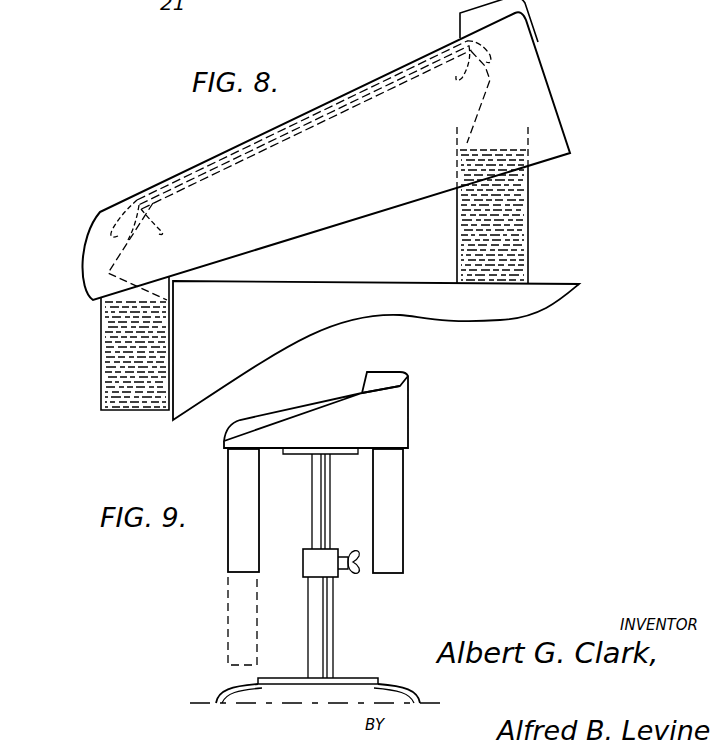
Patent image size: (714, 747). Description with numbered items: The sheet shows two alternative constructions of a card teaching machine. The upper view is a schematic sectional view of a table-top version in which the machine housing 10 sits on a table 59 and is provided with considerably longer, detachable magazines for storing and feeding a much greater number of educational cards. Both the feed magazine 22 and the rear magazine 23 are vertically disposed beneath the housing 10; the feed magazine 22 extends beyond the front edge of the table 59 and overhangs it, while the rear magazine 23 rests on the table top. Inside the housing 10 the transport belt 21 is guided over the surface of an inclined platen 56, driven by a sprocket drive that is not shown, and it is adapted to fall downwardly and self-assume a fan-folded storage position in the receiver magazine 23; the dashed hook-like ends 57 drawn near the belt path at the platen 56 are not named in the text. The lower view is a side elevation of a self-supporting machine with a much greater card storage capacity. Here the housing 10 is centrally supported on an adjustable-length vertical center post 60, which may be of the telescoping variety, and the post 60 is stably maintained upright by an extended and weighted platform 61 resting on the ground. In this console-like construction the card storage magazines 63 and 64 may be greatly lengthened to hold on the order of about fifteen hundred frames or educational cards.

In FIG. 8, the housing 10 is at (547, 70).
In FIG. 9, the housing 10 is at (410, 414).
In FIG. 8, the transport belt 21 is at (112, 323).
In FIG. 8, the feed magazine 22 is at (100, 347).
In FIG. 8, the rear magazine 23 is at (530, 212).
In FIG. 8, the inclined platen 56 is at (268, 149).
In FIG. 8, the hooks 57 is at (116, 212).
In FIG. 8, the table 59 is at (176, 300).
In FIG. 9, the vertical center post 60 is at (337, 612).
In FIG. 9, the platform 61 is at (344, 678).
In FIG. 9, the card storage magazine 63 is at (228, 551).
In FIG. 9, the card storage magazine 64 is at (405, 490).